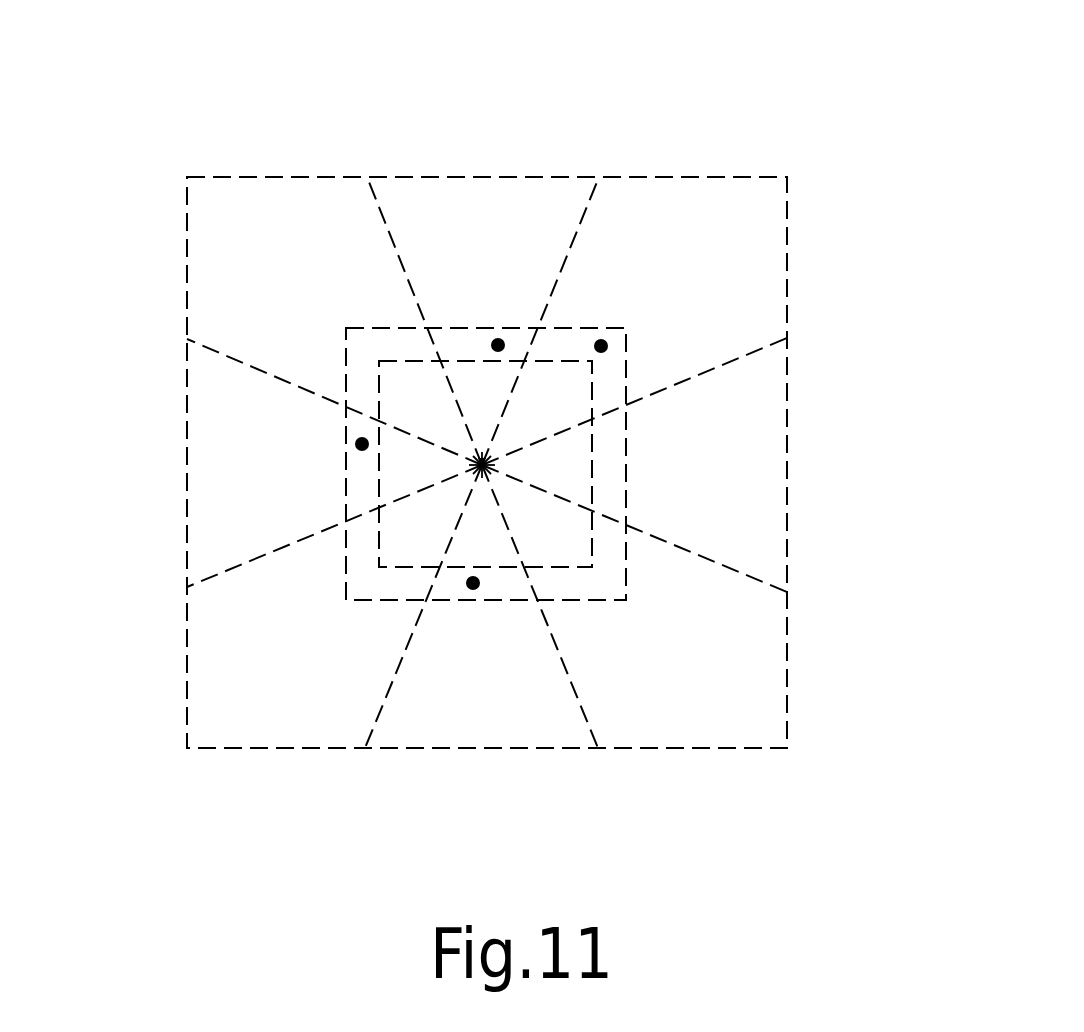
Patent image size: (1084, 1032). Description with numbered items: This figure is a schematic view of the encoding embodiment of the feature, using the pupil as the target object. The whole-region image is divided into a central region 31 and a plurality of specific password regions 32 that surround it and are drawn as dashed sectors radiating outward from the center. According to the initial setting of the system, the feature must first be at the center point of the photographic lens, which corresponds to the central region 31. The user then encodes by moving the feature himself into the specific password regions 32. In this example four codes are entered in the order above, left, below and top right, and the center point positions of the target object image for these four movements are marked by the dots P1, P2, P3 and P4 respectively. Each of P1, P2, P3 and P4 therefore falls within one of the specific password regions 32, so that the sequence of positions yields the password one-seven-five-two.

The central region 31 is at (575, 458).
The specific password regions 32 is at (455, 340).
The center point position of the target object image (first code) P1 is at (498, 345).
The center point position of the target object image (second code) P2 is at (362, 444).
The center point position of the target object image (third code) P3 is at (473, 583).
The center point position of the target object image (fourth code) P4 is at (601, 346).